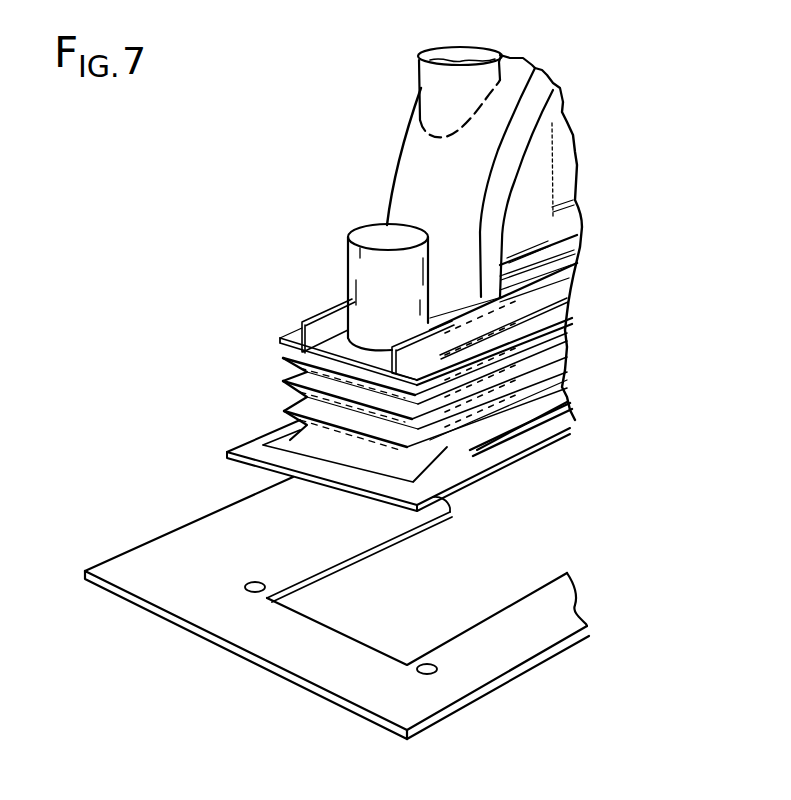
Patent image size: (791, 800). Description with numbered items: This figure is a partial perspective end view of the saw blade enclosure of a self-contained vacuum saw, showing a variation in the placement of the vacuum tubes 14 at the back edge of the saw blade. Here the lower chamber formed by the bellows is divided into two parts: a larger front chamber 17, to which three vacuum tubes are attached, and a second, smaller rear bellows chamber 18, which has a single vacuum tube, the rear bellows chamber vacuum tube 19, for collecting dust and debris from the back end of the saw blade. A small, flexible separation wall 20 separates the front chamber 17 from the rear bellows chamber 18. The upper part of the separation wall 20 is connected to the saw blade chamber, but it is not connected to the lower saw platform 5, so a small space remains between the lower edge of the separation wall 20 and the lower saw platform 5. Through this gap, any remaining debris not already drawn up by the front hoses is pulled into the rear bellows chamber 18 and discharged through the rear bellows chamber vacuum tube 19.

The lower saw platform 5 is at (173, 552).
The vacuum tubes 14 is at (437, 83).
The front chamber 17 is at (535, 355).
The rear bellows chamber 18 is at (293, 387).
The rear bellows chamber vacuum tube 19 is at (373, 283).
The separation wall 20 is at (532, 428).